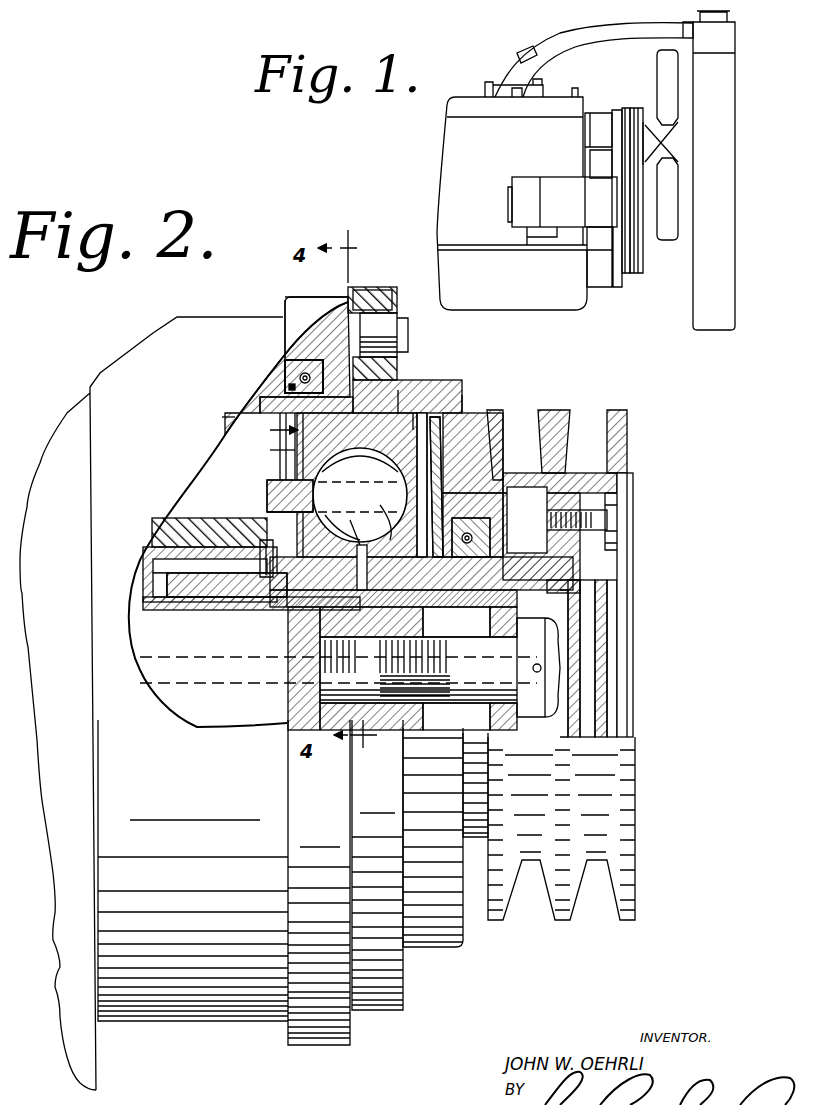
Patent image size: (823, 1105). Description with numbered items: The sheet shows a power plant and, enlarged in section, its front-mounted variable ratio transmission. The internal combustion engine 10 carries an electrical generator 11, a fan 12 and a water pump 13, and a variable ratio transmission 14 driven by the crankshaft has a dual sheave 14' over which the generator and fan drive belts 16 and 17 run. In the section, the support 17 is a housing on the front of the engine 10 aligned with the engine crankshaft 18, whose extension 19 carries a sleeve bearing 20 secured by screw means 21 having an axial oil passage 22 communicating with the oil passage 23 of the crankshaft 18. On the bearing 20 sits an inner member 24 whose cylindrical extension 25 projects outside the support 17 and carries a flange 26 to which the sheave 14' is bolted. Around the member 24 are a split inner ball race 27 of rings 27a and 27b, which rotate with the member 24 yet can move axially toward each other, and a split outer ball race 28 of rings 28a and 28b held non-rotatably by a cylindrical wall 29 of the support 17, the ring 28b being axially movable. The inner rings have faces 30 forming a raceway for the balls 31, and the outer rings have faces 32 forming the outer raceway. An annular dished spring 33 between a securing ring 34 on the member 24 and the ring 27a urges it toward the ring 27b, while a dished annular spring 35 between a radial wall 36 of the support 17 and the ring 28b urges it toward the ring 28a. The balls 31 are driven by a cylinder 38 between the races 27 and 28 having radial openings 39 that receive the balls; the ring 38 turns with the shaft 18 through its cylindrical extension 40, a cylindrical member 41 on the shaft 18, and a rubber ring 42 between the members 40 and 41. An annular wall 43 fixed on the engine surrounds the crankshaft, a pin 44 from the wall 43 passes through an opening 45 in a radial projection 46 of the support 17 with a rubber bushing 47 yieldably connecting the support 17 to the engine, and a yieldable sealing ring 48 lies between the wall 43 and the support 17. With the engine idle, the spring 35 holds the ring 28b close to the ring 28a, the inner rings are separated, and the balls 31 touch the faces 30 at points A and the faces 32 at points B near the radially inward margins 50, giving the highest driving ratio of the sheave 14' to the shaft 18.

In FIG. 1, the internal combustion engine 10 is at (455, 160).
In FIG. 2, the internal combustion engine 10 is at (117, 382).
In FIG. 1, the electrical generator 11 is at (547, 185).
In FIG. 1, the fan 12 is at (663, 84).
In FIG. 1, the water pump 13 is at (600, 122).
In FIG. 2, the variable ratio transmission 14 is at (552, 475).
In FIG. 1, the dual sheave 14' is at (655, 209).
In FIG. 2, the dual sheave 14' is at (651, 583).
In FIG. 1, the generator drive belt 16 is at (628, 277).
In FIG. 1, the support 17 is at (638, 250).
In FIG. 2, the support 17 is at (452, 390).
In FIG. 2, the engine crankshaft 18 is at (190, 690).
In FIG. 2, the crankshaft extension 19 is at (262, 712).
In FIG. 2, the sleeve bearing 20 is at (232, 603).
In FIG. 2, the screw means 21 is at (480, 687).
In FIG. 2, the oil passage 22 is at (287, 682).
In FIG. 2, the oil passage of the crankshaft 23 is at (287, 660).
In FIG. 2, the inner member 24 is at (178, 607).
In FIG. 2, the cylindrical extension 25 is at (477, 577).
In FIG. 2, the flange 26 is at (585, 577).
In FIG. 2, the inner ball race 27 is at (273, 519).
In FIG. 2, the inner race ring 27a is at (330, 557).
In FIG. 2, the inner race ring 27b is at (395, 557).
In FIG. 2, the outer ball race 28 is at (293, 450).
In FIG. 2, the outer race ring 28a is at (290, 433).
In FIG. 2, the outer race ring 28b is at (413, 412).
In FIG. 2, the cylindrical wall 29 is at (392, 408).
In FIG. 2, the faces 30 is at (360, 496).
In FIG. 2, the balls 31 is at (330, 452).
In FIG. 2, the faces 32 is at (362, 438).
In FIG. 2, the annular dished spring 33 is at (288, 545).
In FIG. 2, the securing ring 34 is at (275, 593).
In FIG. 2, the dished annular spring 35 is at (462, 393).
In FIG. 2, the radial wall 36 is at (457, 463).
In FIG. 2, the ball driving ring 38 is at (267, 481).
In FIG. 2, the radial openings 39 is at (267, 494).
In FIG. 2, the cylindrical extension 40 is at (182, 518).
In FIG. 2, the cylindrical member 41 is at (147, 560).
In FIG. 2, the rubber ring 42 is at (157, 520).
In FIG. 2, the annular wall 43 is at (270, 365).
In FIG. 2, the pin 44 is at (380, 330).
In FIG. 2, the opening 45 is at (370, 297).
In FIG. 2, the radial projection 46 is at (360, 288).
In FIG. 2, the rubber bushing 47 is at (358, 306).
In FIG. 2, the yieldable sealing ring 48 is at (285, 380).
In FIG. 2, the radially inward margins 50 is at (417, 453).